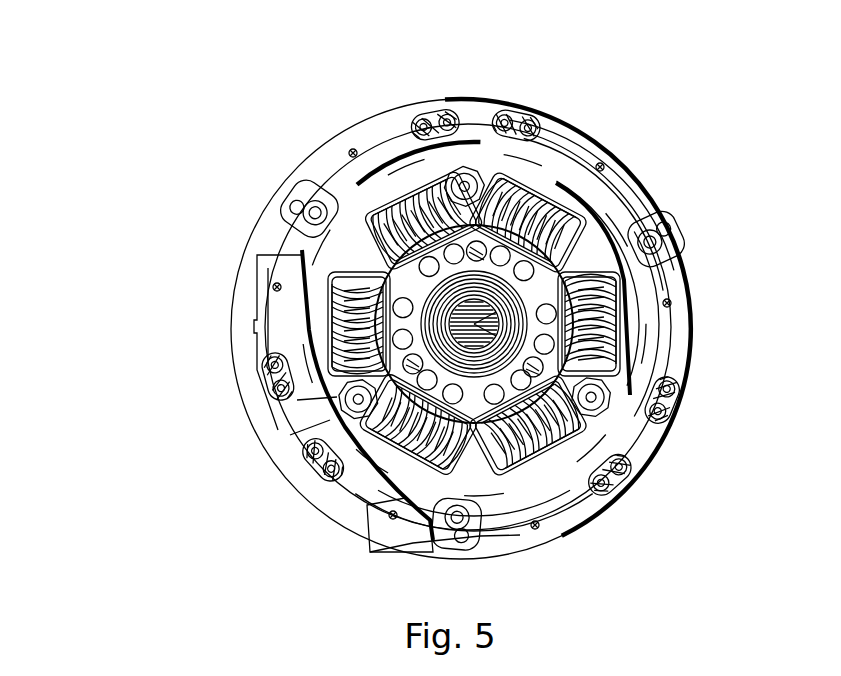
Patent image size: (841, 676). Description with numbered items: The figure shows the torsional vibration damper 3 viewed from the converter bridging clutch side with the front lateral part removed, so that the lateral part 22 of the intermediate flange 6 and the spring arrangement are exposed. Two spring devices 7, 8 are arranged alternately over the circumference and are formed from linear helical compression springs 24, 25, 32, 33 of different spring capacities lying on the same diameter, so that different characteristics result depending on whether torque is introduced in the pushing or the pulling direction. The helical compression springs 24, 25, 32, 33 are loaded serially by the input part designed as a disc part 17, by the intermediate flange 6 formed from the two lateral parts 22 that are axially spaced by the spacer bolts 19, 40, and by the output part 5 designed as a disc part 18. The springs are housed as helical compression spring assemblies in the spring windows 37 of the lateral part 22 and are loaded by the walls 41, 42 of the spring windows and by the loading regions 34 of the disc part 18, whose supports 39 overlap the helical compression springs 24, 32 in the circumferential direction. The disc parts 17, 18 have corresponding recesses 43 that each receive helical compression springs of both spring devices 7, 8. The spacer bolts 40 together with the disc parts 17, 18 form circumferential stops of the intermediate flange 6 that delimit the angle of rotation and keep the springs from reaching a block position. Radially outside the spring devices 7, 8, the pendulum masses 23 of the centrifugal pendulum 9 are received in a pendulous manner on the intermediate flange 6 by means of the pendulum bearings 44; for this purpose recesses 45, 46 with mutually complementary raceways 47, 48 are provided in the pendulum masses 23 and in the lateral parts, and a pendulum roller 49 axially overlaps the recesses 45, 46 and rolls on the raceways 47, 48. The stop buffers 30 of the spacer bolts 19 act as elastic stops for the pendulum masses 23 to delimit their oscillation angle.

The torsional vibration damper 3 is at (511, 293).
The output part 5 is at (436, 338).
The intermediate flange 6 is at (589, 317).
The spring device 7 is at (516, 238).
The spring device 8 is at (432, 222).
The centrifugal pendulum 9 is at (354, 414).
The disc part 17 is at (687, 239).
The disc part 18 is at (276, 209).
The spacer bolt 19 is at (425, 378).
The lateral part 22 is at (474, 418).
The pendulum mass 23 is at (509, 349).
The helical compression spring 24 is at (443, 359).
The helical compression spring 25 is at (435, 357).
The stop buffer 30 is at (371, 330).
The helical compression spring 32 is at (533, 314).
The helical compression spring 33 is at (512, 298).
The loading region 34 is at (530, 385).
The spring window 37 is at (661, 224).
The support 39 is at (474, 314).
The spacer bolt 40 is at (475, 249).
The wall 41 is at (474, 241).
The wall 42 is at (470, 440).
The recess 43 is at (485, 419).
The pendulum bearing 44 is at (434, 275).
The recess 45 is at (712, 443).
The recess 46 is at (695, 488).
The raceway 47 is at (638, 290).
The raceway 48 is at (594, 304).
The pendulum roller 49 is at (488, 452).